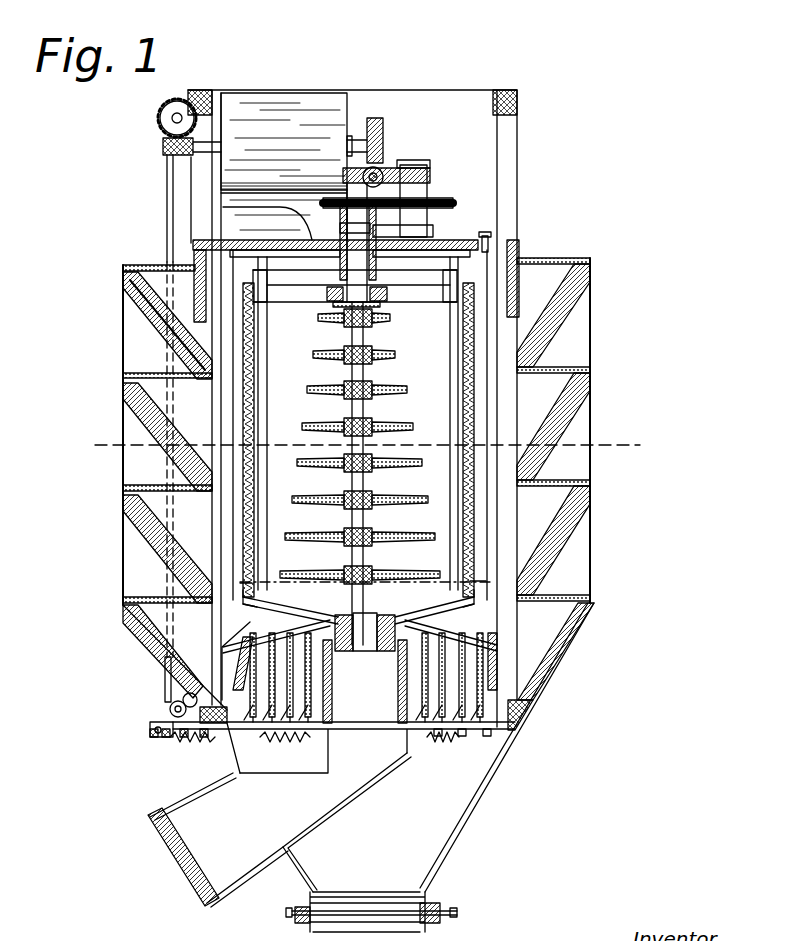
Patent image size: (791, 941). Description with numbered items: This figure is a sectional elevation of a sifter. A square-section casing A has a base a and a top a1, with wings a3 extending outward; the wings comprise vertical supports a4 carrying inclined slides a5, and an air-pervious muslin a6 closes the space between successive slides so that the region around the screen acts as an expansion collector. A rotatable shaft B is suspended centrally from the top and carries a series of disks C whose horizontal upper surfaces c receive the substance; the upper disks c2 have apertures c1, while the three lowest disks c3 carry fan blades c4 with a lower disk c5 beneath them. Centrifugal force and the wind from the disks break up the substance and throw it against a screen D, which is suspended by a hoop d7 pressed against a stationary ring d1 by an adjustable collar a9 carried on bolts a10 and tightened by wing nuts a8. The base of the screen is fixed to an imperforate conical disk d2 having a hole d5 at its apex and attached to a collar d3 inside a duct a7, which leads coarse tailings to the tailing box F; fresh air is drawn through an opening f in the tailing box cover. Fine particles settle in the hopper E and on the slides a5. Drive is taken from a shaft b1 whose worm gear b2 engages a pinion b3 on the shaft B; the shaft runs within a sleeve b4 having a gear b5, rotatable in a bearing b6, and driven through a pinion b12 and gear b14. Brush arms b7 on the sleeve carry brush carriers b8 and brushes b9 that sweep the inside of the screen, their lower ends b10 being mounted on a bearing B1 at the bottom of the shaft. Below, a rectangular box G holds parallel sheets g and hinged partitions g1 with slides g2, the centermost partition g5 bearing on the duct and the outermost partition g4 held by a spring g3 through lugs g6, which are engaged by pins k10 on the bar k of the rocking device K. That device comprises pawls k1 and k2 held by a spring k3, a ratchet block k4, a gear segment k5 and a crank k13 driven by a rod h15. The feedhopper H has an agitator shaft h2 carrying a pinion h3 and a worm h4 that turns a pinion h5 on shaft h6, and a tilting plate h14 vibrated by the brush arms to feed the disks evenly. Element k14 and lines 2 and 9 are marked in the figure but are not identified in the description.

The casing A is at (507, 342).
The rotatable shaft B is at (477, 377).
The bearing B1 is at (472, 623).
The disks C is at (483, 414).
The screen D is at (477, 460).
The hopper E is at (450, 817).
The tailing box F is at (217, 813).
The rectangular box G is at (470, 650).
The feedhopper H is at (268, 137).
The rocking device K is at (150, 723).
The base a is at (213, 730).
The top a1 is at (460, 240).
The wings a3 is at (123, 298).
The vertical supports a4 is at (153, 273).
The inclined slides a5 is at (145, 318).
The muslin closure a6 is at (138, 378).
The duct a7 is at (323, 667).
The wing nuts a8 is at (525, 268).
The collar a9 is at (503, 265).
The bolts a10 is at (487, 240).
The shaft b1 is at (385, 168).
The worm gear b2 is at (400, 170).
The pinion b3 is at (362, 140).
The sleeve b4 is at (432, 180).
The gear b5 is at (413, 175).
The bearing b6 is at (445, 195).
The brush arms b7 is at (395, 324).
The brush carriers b8 is at (457, 332).
The brushes b9 is at (465, 352).
The lower ends of brush arms b10 is at (260, 607).
The pinion b12 is at (452, 198).
The gear b14 is at (440, 205).
The horizontal upper surfaces c is at (394, 354).
The apertures c1 is at (400, 426).
The upper disks c2 is at (407, 391).
The three lowest disks c3 is at (425, 470).
The fan blades c4 is at (428, 504).
The lower disk c5 is at (430, 541).
The stationary ring d1 is at (460, 253).
The conical disk d2 is at (475, 613).
The collar d3 is at (340, 652).
The hole d5 is at (382, 652).
The hoop d7 is at (440, 250).
The opening f is at (160, 842).
The vertically parallel sheets g is at (470, 668).
The hinged partitions g1 is at (253, 730).
The inclined slides g2 is at (533, 723).
The spring g3 is at (462, 738).
The partition g4 is at (503, 693).
The centermost partition g5 is at (333, 723).
The lugs g6 is at (307, 745).
The shaft h2 is at (207, 100).
The pinion h3 is at (375, 166).
The worm h4 is at (163, 147).
The pinion h5 is at (160, 118).
The shaft h6 is at (177, 100).
The tilting plate h14 is at (221, 210).
The rod h15 is at (165, 173).
The horizontal bar k is at (153, 738).
The pawl k1 is at (164, 740).
The pawl k2 is at (203, 740).
The spring k3 is at (183, 740).
The ratchet block k4 is at (169, 708).
The gear segment k5 is at (182, 696).
The pins k10 is at (283, 740).
The crank k13 is at (165, 698).
The rod k14 is at (165, 690).
The section line 2 is at (361, 444).
The section line 9 is at (360, 583).